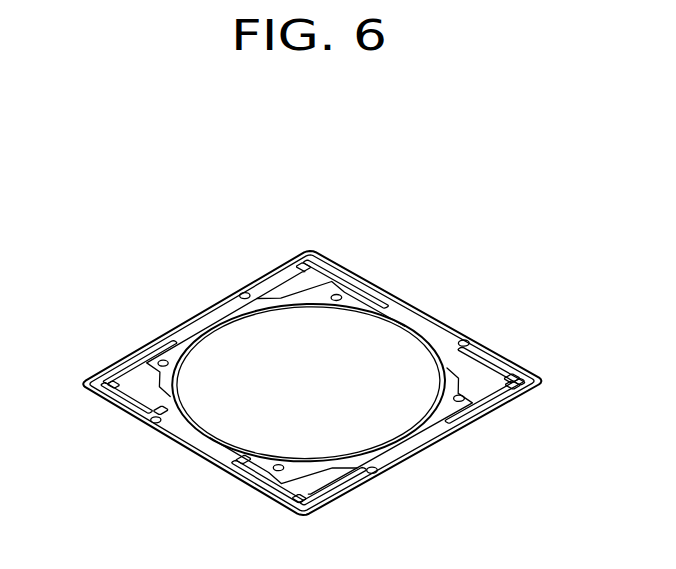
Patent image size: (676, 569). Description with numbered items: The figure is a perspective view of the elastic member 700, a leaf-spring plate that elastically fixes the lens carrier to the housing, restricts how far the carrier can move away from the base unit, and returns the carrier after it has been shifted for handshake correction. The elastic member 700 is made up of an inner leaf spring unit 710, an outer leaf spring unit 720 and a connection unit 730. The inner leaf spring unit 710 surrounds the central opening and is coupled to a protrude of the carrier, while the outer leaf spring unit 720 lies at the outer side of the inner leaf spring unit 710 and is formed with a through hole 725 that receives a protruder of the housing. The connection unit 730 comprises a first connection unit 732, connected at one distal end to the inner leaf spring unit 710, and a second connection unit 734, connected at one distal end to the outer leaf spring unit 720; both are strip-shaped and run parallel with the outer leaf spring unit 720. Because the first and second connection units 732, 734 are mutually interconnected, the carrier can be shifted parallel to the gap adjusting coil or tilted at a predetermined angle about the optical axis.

The elastic member 700 is at (411, 289).
The inner leaf spring unit 710 is at (242, 462).
The outer leaf spring unit 720 is at (157, 333).
The through hole 725 is at (146, 419).
The connection unit 730 is at (289, 278).
The first connection unit 732 is at (505, 402).
The second connection unit 734 is at (485, 365).